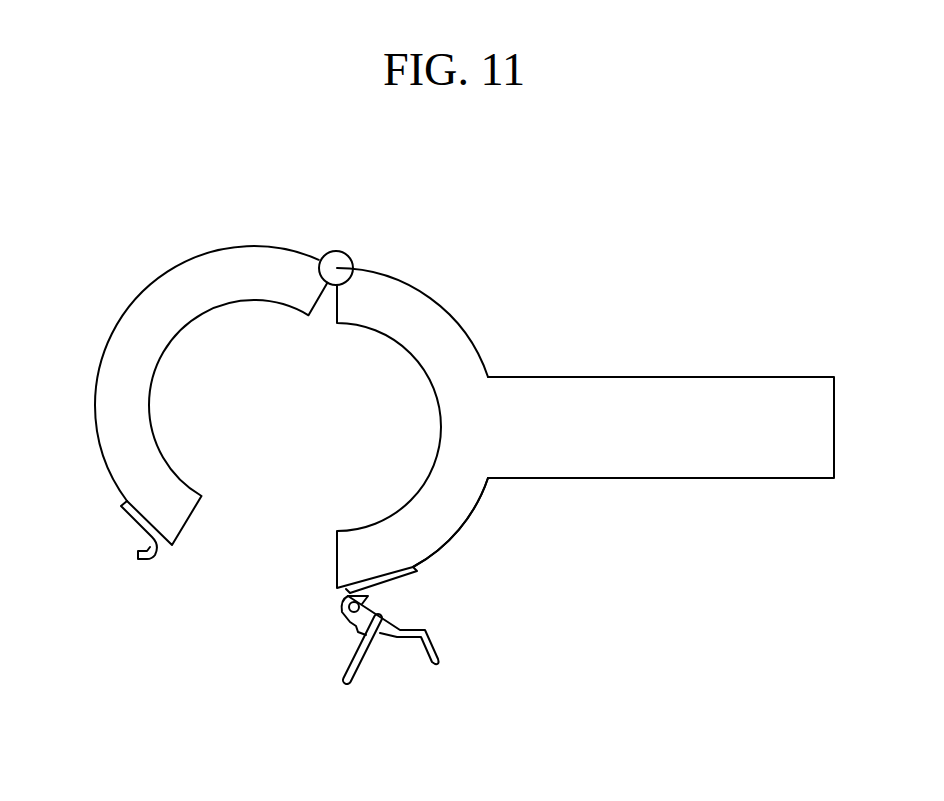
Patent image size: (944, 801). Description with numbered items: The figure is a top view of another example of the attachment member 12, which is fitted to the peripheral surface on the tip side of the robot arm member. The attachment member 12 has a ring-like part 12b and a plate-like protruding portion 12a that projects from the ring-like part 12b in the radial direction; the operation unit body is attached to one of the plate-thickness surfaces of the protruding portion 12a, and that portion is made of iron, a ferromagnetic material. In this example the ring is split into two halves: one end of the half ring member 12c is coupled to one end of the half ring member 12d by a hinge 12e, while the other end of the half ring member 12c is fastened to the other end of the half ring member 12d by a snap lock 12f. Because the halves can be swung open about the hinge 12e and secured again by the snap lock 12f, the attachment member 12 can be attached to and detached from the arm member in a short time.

The attachment member 12 is at (779, 364).
The protruding portion 12a is at (690, 377).
The ring-like part 12b is at (433, 298).
The half ring member 12c is at (130, 308).
The half ring member 12d is at (458, 532).
The hinge 12e is at (338, 251).
The snap lock 12f is at (130, 520).